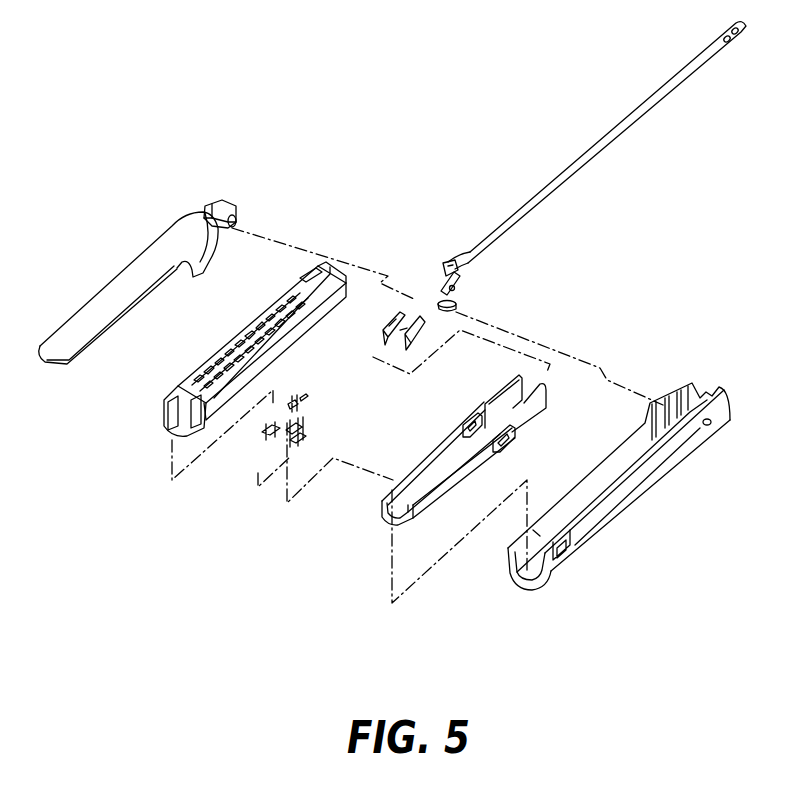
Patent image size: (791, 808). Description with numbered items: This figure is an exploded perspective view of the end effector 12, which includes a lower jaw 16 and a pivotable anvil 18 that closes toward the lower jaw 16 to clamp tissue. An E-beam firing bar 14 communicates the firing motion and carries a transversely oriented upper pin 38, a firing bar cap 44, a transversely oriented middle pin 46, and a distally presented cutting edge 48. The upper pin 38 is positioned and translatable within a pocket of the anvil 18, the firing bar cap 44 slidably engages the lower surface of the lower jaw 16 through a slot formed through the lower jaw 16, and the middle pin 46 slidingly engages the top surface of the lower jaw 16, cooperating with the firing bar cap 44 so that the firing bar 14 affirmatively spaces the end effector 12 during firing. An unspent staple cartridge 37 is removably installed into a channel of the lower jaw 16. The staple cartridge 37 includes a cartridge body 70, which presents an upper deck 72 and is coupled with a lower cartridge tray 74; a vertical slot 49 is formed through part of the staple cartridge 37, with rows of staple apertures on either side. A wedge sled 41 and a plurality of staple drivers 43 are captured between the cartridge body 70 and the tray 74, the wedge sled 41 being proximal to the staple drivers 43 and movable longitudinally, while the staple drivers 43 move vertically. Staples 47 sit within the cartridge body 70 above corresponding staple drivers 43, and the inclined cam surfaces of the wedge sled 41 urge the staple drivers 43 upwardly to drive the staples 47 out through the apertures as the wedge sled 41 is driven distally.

The end effector 12 is at (534, 642).
The firing bar 14 is at (606, 135).
The lower jaw 16 is at (606, 527).
The anvil 18 is at (127, 287).
The staple cartridge 37 is at (205, 340).
The upper pin 38 is at (448, 262).
The wedge sled 41 is at (382, 325).
The staple drivers 43 is at (290, 450).
The firing bar cap 44 is at (453, 306).
The middle pin 46 is at (457, 287).
The staples 47 is at (303, 408).
The cutting edge 48 is at (442, 278).
The vertical slot 49 is at (305, 286).
The cartridge body 70 is at (297, 338).
The upper deck 72 is at (220, 345).
The cartridge tray 74 is at (530, 412).